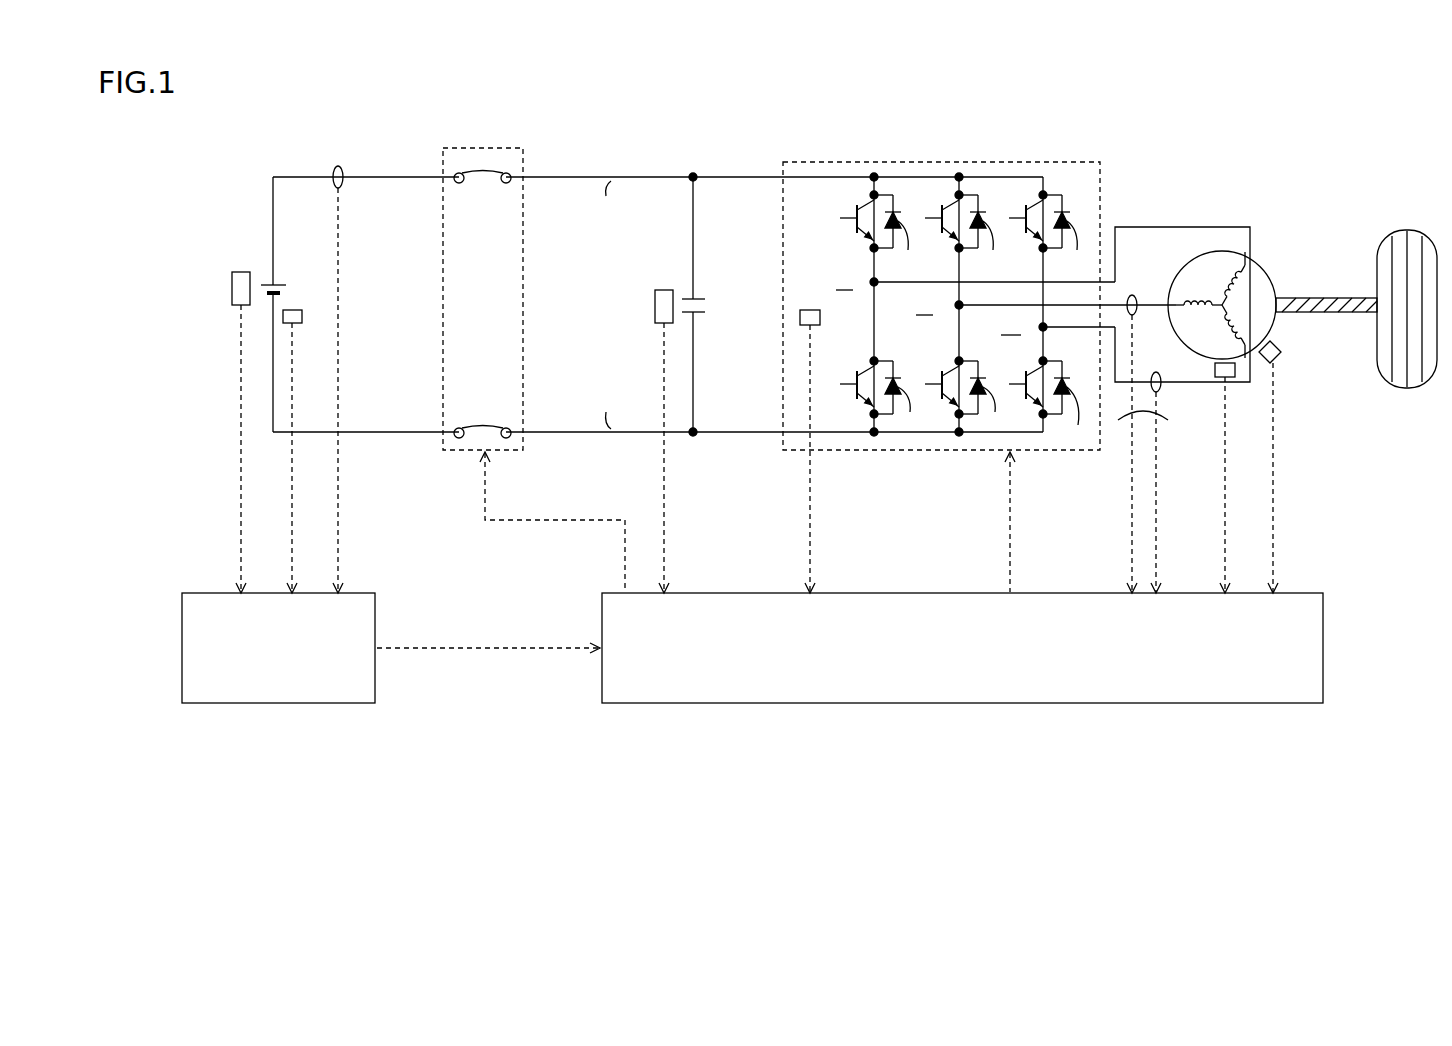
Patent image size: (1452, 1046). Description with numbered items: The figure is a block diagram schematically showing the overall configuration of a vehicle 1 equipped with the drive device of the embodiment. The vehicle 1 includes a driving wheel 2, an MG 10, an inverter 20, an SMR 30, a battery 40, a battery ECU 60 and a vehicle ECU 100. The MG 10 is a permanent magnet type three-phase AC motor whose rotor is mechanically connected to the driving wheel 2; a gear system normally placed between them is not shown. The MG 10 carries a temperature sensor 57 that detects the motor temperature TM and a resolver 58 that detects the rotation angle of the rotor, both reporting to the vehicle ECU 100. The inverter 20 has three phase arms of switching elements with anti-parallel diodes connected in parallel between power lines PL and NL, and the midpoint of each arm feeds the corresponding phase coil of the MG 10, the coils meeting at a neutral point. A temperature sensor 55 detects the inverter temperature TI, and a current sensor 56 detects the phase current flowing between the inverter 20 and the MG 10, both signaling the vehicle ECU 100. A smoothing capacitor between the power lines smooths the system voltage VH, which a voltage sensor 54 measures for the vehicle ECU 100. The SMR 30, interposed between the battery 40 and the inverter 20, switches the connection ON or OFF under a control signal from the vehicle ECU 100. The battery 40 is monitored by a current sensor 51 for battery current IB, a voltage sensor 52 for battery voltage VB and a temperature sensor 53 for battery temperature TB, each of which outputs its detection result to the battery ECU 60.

The vehicle 1 is at (745, 103).
The driving wheel 2 is at (1400, 233).
The MG (Motor Generator) 10 is at (1268, 264).
The inverter 20 is at (1035, 160).
The SMR (System Main Relay) 30 is at (483, 151).
The battery 40 is at (281, 282).
The current sensor 51 is at (338, 166).
The voltage sensor 52 is at (236, 270).
The temperature sensor 53 is at (302, 451).
The voltage sensor 54 is at (663, 288).
The temperature sensor 55 is at (810, 308).
The current sensor 56 is at (1133, 293).
The temperature sensor 57 is at (1216, 378).
The resolver 58 is at (1282, 356).
The battery ECU (Electronic Control Unit) 60 is at (272, 704).
The vehicle ECU 100 is at (1003, 704).